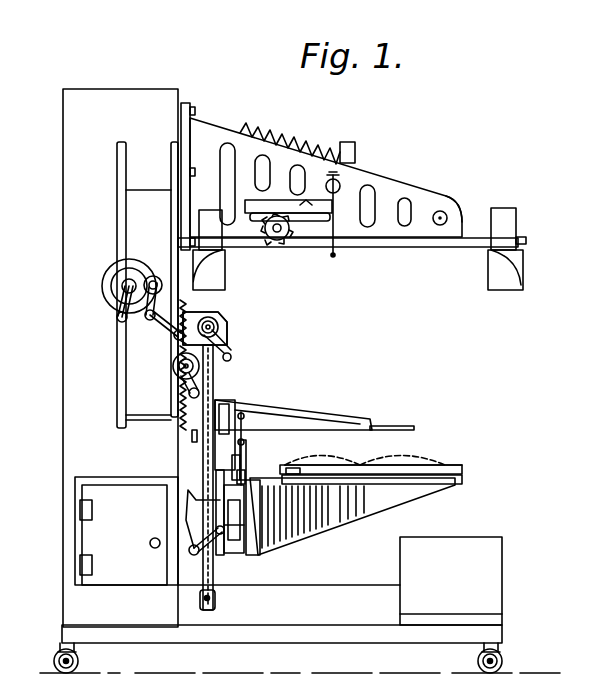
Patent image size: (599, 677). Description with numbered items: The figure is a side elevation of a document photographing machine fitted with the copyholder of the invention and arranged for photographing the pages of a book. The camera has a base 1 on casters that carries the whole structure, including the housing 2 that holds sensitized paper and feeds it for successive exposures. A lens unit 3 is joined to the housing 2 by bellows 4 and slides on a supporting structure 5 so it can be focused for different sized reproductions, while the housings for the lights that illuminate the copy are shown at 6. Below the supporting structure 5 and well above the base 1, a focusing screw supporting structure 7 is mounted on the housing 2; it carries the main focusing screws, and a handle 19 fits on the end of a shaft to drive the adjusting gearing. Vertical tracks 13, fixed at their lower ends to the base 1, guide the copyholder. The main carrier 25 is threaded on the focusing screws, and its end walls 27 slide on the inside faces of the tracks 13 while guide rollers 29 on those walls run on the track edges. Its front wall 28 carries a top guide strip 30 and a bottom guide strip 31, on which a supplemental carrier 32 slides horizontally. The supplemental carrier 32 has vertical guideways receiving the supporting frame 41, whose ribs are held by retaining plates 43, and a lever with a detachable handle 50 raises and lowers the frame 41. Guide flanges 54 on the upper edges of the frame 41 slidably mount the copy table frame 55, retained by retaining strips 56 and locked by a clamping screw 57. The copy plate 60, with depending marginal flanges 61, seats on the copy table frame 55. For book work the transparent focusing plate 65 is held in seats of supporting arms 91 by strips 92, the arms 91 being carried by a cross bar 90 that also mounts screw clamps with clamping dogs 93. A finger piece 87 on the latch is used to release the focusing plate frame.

The base 1 is at (326, 566).
The housing 2 is at (63, 408).
The lens unit 3 is at (372, 168).
The bellows 4 is at (296, 141).
The supporting structure 5 is at (457, 192).
The light housings 6 is at (212, 280).
The focusing screw supporting structure 7 is at (236, 342).
The vertical tracks 13 is at (214, 594).
The handle 19 is at (216, 336).
The main carrier 25 is at (221, 507).
The end walls 27 is at (192, 503).
The front wall 28 is at (244, 525).
The guide rollers 29 is at (190, 488).
The top guide strip 30 is at (237, 462).
The bottom guide strip 31 is at (250, 556).
The supplemental carrier 32 is at (247, 480).
The supporting frame 41 is at (309, 546).
The retaining plates 43 is at (244, 510).
The detachable handle 50 is at (244, 455).
The guide flanges 54 is at (298, 486).
The copy table frame 55 is at (462, 479).
The retaining strips 56 is at (332, 486).
The clamping screw 57 is at (384, 500).
The copy plate 60 is at (469, 469).
The marginal flanges 61 is at (418, 479).
The focusing plate 65 is at (400, 426).
The finger piece 87 is at (294, 468).
The cross bar 90 is at (232, 402).
The focusing plate supporting arms 91 is at (328, 420).
The strips 92 is at (346, 457).
The clamping dog 93 is at (191, 436).